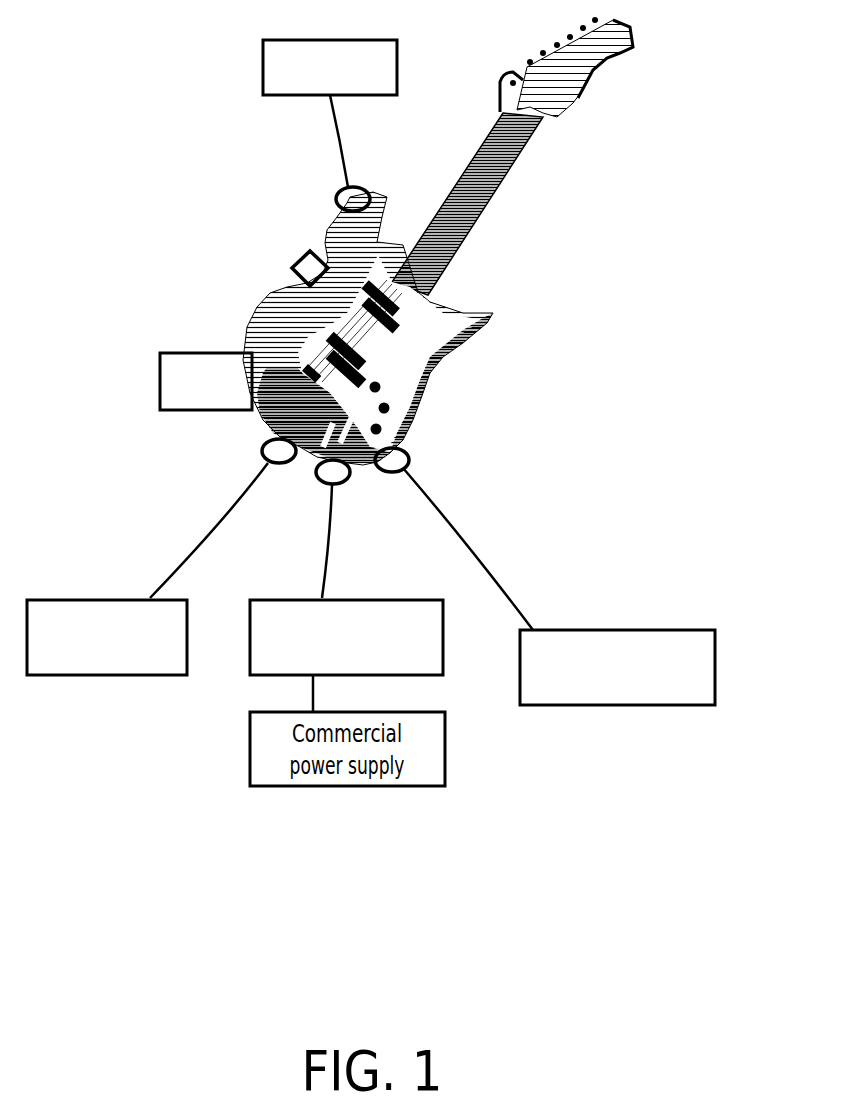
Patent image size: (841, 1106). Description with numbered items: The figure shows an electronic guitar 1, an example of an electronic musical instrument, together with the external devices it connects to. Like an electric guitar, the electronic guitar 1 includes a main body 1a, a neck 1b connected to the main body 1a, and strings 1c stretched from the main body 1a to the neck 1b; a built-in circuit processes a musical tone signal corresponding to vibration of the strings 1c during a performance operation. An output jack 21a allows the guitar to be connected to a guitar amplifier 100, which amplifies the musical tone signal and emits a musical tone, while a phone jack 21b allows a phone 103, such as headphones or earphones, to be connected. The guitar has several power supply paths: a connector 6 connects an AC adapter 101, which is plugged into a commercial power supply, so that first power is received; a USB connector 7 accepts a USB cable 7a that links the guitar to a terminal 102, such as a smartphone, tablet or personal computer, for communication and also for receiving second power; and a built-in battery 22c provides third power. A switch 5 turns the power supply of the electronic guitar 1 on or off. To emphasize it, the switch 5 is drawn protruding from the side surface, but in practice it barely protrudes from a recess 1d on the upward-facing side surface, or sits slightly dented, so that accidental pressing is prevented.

The electronic guitar 1 is at (516, 235).
The main body 1a is at (493, 318).
The neck 1b is at (480, 214).
The strings 1c is at (407, 328).
The recess 1d is at (318, 240).
The switch 5 is at (290, 263).
The connector 6 is at (348, 481).
The USB connector 7 is at (280, 464).
The USB cable 7a is at (220, 515).
The output jack 21a is at (409, 458).
The phone jack 21b is at (368, 190).
The battery 22c is at (160, 367).
The guitar amplifier 100 is at (586, 705).
The AC adapter 101 is at (250, 669).
The terminal 102 is at (115, 675).
The phone 103 is at (263, 70).